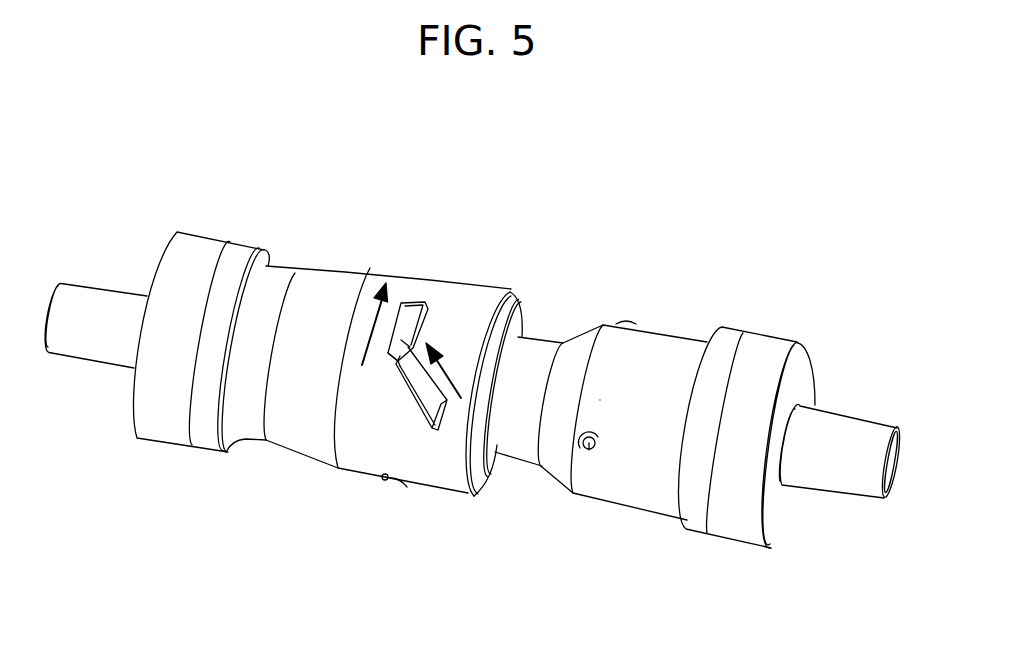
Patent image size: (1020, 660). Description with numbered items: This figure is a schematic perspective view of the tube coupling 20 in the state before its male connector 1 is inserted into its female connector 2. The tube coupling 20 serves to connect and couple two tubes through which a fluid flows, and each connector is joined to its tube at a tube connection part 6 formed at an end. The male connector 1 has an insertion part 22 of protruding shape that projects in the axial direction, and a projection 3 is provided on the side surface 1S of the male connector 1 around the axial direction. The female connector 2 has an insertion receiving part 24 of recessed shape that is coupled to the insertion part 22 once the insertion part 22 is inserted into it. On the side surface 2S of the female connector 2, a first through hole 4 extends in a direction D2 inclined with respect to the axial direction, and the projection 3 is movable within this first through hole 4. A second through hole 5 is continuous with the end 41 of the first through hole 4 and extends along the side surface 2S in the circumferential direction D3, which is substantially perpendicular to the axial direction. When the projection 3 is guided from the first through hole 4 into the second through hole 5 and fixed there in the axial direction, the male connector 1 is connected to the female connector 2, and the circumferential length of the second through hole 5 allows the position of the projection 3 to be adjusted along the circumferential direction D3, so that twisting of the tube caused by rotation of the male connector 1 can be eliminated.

The male connector 1 is at (647, 370).
The side surface 1S is at (633, 455).
The female connector 2 is at (325, 287).
The side surface 2S is at (430, 460).
The projection 3 is at (588, 450).
The first through hole 4 is at (409, 372).
The end 41 is at (395, 363).
The second through hole 5 is at (409, 316).
The tube connection part 6 is at (102, 340).
The tube coupling 20 is at (648, 225).
The insertion part 22 is at (557, 423).
The insertion receiving part 24 is at (496, 339).
The direction D2 is at (443, 365).
The circumferential direction D3 is at (368, 347).